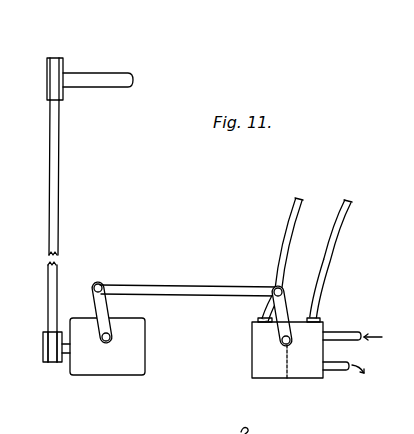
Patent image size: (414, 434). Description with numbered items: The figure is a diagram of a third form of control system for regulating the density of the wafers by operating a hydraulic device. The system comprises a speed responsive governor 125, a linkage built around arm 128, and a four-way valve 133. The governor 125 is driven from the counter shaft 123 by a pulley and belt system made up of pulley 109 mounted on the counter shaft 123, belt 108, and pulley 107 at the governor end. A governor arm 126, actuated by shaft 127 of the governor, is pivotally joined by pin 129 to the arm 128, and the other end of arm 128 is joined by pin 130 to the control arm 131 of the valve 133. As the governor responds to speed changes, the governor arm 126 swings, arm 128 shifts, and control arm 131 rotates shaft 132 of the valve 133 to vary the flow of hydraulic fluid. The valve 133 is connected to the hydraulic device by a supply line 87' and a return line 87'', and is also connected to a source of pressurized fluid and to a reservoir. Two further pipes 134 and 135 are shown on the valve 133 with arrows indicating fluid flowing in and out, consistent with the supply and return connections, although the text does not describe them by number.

The supply line 87' is at (293, 243).
The return line 87'' is at (343, 243).
The pulley 107 is at (43, 362).
The belt 108 is at (60, 180).
The pulley 109 is at (47, 58).
The counter shaft 123 is at (108, 75).
The speed responsive governor 125 is at (127, 368).
The governor arm 126 is at (106, 308).
The shaft 127 is at (106, 342).
The arm 128 is at (201, 285).
The pin 129 is at (102, 284).
The pin 130 is at (283, 290).
The control arm 131 is at (280, 330).
The shaft 132 is at (287, 380).
The four-way valve 133 is at (262, 370).
The inlet pipe 134 is at (345, 332).
The outlet pipe 135 is at (345, 371).